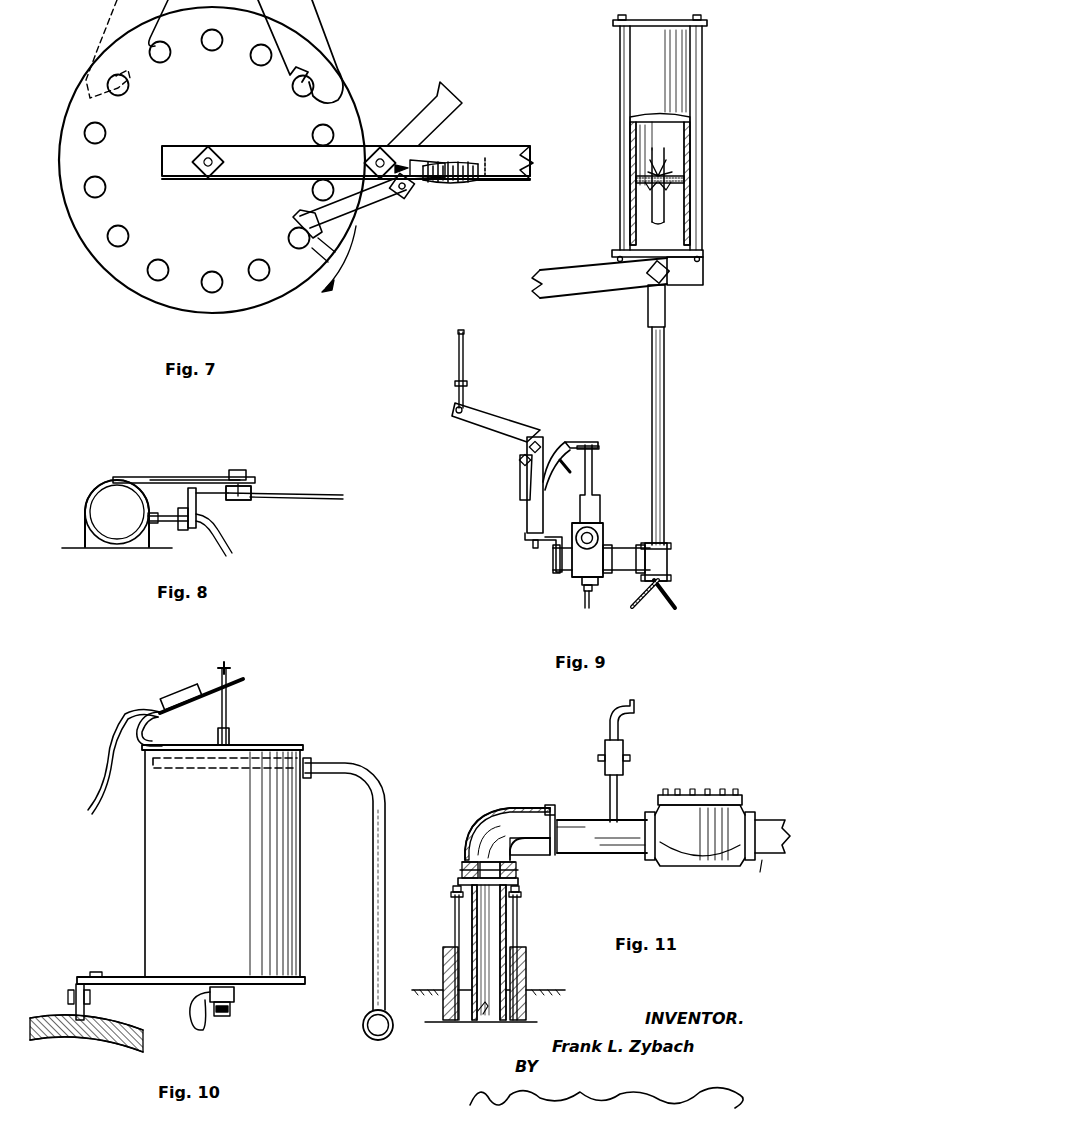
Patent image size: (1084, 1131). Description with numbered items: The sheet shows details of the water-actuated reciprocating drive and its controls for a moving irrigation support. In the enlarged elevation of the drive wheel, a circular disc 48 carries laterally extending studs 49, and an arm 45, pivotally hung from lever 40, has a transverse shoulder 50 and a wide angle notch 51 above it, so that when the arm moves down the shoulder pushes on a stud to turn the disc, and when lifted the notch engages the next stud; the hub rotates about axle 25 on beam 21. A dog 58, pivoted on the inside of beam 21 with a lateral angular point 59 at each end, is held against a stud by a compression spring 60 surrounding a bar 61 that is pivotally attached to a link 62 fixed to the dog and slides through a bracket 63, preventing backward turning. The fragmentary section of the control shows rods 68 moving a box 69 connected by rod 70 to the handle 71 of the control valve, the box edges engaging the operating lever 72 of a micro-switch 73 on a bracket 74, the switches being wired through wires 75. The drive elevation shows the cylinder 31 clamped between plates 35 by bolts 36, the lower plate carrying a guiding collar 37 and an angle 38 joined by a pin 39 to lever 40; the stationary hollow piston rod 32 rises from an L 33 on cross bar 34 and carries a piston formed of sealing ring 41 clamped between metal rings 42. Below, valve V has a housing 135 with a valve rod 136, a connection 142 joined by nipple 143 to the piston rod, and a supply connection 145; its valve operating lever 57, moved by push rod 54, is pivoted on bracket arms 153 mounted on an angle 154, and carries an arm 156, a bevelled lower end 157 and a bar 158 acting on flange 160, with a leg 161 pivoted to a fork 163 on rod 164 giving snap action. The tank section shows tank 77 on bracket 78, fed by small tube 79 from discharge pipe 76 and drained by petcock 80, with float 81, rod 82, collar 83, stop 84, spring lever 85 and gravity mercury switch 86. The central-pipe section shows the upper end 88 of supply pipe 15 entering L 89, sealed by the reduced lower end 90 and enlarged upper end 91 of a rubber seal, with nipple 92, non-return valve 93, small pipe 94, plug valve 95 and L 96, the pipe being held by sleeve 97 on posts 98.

In FIG. 7, the beam 21 is at (228, 178).
In FIG. 7, the axle 25 is at (210, 152).
In FIG. 7, the arm 45 is at (97, 52).
In FIG. 7, the circular disc 48 is at (268, 300).
In FIG. 7, the studs 49 is at (125, 84).
In FIG. 7, the transverse shoulder 50 is at (122, 76).
In FIG. 7, the wide angle notch 51 is at (292, 63).
In FIG. 7, the dog 58 is at (362, 195).
In FIG. 7, the lateral angular point 59 is at (445, 100).
In FIG. 7, the compression spring 60 is at (450, 180).
In FIG. 7, the bar 61 is at (410, 190).
In FIG. 7, the link 62 is at (408, 170).
In FIG. 7, the bracket 63 is at (488, 160).
In FIG. 8, the wires 75 is at (163, 477).
In FIG. 10, the wires 75 is at (108, 738).
In FIG. 8, the operating lever 72 is at (222, 478).
In FIG. 8, the micro-switch 73 is at (238, 469).
In FIG. 8, the bracket 74 is at (252, 486).
In FIG. 8, the rods 68 is at (300, 494).
In FIG. 8, the box 69 is at (252, 498).
In FIG. 8, the rod 70 is at (200, 494).
In FIG. 8, the handle 71 is at (187, 500).
In FIG. 9, the cylinder 31 is at (692, 128).
In FIG. 9, the piston rod 32 is at (668, 206).
In FIG. 9, the L 33 is at (668, 562).
In FIG. 9, the cross bar 34 is at (672, 600).
In FIG. 9, the plate 35 is at (705, 22).
In FIG. 9, the bolts 36 is at (692, 153).
In FIG. 9, the guiding collar 37 is at (667, 316).
In FIG. 9, the angle 38 is at (704, 273).
In FIG. 9, the pin or bolt 39 is at (665, 280).
In FIG. 9, the lever 40 is at (565, 292).
In FIG. 9, the sealing ring 41 is at (688, 180).
In FIG. 9, the metal rings 42 is at (690, 172).
In FIG. 9, the push rod 54 is at (465, 348).
In FIG. 9, the valve operating lever 57 is at (497, 416).
In FIG. 9, the housing 135 is at (570, 562).
In FIG. 9, the valve rod 136 is at (594, 454).
In FIG. 9, the connection 142 is at (596, 586).
In FIG. 9, the nipple 143 is at (622, 550).
In FIG. 9, the connection 145 is at (592, 590).
In FIG. 9, the bracket arms 153 is at (528, 520).
In FIG. 9, the angle 154 is at (556, 538).
In FIG. 9, the arm 156 is at (582, 440).
In FIG. 9, the lower end 157 is at (548, 474).
In FIG. 9, the bar 158 is at (572, 466).
In FIG. 9, the flange 160 is at (598, 441).
In FIG. 9, the leg 161 is at (520, 452).
In FIG. 9, the fork 163 is at (521, 484).
In FIG. 9, the rod 164 is at (533, 546).
In FIG. 9, the valve V is at (600, 524).
In FIG. 10, the discharge pipe 76 is at (384, 1036).
In FIG. 10, the tank 77 is at (150, 886).
In FIG. 10, the bracket 78 is at (118, 976).
In FIG. 10, the small tube 79 is at (378, 782).
In FIG. 10, the petcock 80 is at (233, 1004).
In FIG. 10, the float 81 is at (212, 770).
In FIG. 10, the rod 82 is at (228, 708).
In FIG. 10, the collar 83 is at (231, 735).
In FIG. 10, the stop 84 is at (228, 667).
In FIG. 10, the spring lever 85 is at (163, 713).
In FIG. 10, the gravity mercury switch 86 is at (178, 690).
In FIG. 11, the upper end 88 is at (508, 870).
In FIG. 11, the L 89 is at (478, 825).
In FIG. 11, the reduced lower end 90 is at (460, 870).
In FIG. 11, the enlarged upper end 91 is at (466, 860).
In FIG. 11, the nipple 92 is at (596, 852).
In FIG. 11, the non-return valve 93 is at (700, 792).
In FIG. 11, the small pipe 94 is at (605, 762).
In FIG. 11, the plug valve 95 is at (618, 790).
In FIG. 11, the L 96 is at (609, 712).
In FIG. 11, the sleeve 97 is at (507, 925).
In FIG. 11, the posts 98 is at (443, 956).
In FIG. 11, the supply pipe 15 is at (479, 1018).